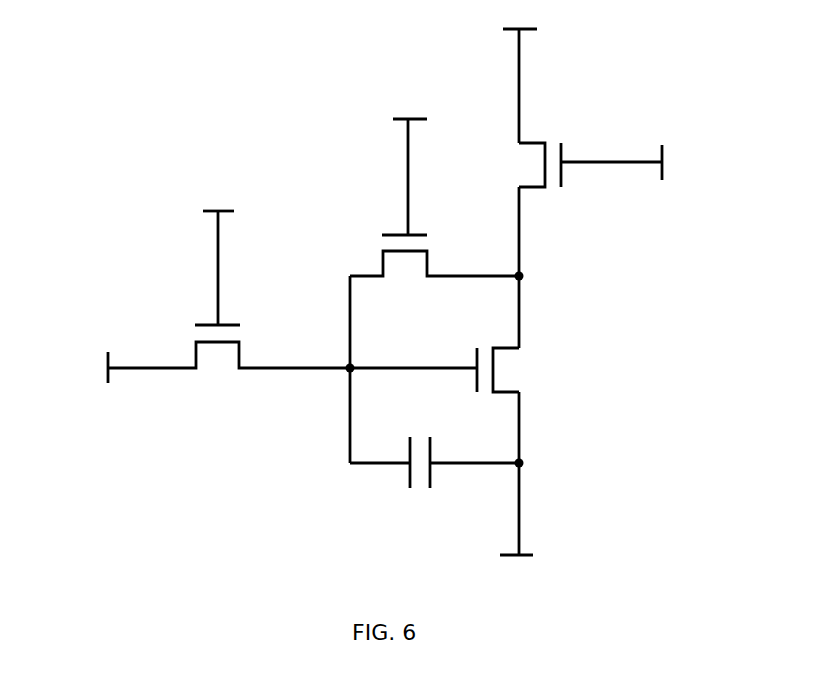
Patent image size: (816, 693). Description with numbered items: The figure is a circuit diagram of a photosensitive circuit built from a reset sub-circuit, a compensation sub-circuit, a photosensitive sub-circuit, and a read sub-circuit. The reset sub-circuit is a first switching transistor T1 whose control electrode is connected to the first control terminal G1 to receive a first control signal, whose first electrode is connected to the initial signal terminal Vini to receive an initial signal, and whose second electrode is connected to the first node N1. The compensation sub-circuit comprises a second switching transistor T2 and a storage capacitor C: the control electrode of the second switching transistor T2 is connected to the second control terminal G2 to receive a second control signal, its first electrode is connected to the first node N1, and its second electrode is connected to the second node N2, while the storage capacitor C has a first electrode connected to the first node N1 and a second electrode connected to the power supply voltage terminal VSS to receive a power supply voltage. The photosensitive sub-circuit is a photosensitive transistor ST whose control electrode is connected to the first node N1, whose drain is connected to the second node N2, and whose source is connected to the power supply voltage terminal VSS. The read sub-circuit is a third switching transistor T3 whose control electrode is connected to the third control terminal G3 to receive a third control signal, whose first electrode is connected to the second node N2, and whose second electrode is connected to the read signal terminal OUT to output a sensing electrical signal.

The first switching transistor T1 is at (229, 363).
The second switching transistor T2 is at (434, 266).
The third switching transistor T3 is at (524, 165).
The photosensitive transistor ST is at (450, 370).
The storage capacitor C is at (437, 440).
The first node N1 is at (330, 369).
The second node N2 is at (539, 267).
The first control terminal G1 is at (218, 255).
The second control terminal G2 is at (410, 164).
The third control terminal G3 is at (637, 162).
The read signal terminal OUT is at (518, 74).
The power supply voltage terminal VSS is at (516, 525).
The initial signal terminal Vini is at (80, 367).